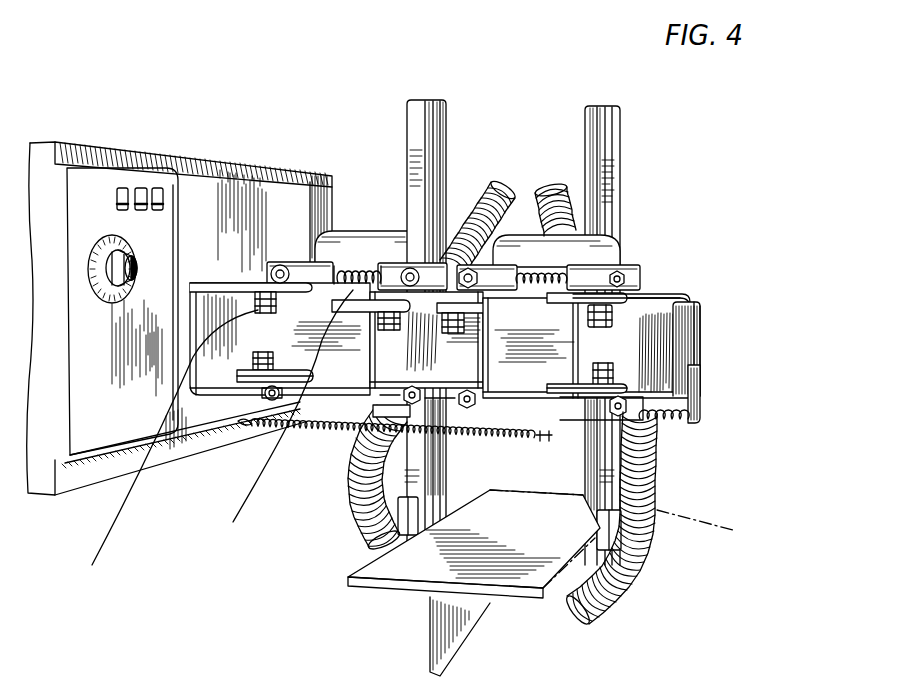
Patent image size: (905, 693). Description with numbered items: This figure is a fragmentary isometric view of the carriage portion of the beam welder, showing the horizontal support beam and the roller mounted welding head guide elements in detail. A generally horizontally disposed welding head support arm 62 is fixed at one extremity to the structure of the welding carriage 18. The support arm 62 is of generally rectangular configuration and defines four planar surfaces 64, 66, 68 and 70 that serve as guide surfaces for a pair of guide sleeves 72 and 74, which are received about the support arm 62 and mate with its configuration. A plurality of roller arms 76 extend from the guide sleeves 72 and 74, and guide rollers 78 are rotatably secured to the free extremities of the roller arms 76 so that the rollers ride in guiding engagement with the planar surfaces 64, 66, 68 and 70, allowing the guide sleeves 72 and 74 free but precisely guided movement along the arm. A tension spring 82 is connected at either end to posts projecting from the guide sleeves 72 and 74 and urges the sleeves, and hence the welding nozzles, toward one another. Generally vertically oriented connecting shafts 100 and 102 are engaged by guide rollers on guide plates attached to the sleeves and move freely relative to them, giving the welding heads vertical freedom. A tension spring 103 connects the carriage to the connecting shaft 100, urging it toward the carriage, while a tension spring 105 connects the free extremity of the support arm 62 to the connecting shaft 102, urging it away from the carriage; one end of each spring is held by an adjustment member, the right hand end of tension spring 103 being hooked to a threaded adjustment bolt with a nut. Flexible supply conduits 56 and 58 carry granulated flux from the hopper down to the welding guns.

The welding carriage 18 is at (210, 180).
The guide sleeve 72 is at (328, 293).
The tension spring 82 is at (357, 290).
The connecting shaft 102 is at (444, 123).
The connecting shaft 100 is at (617, 148).
The roller arms 76 is at (571, 297).
The planar surface 64 is at (643, 321).
The planar surface 66 is at (681, 297).
The welding head support arm 62 is at (694, 325).
The planar surface 68 is at (702, 353).
The planar surface 70 is at (690, 404).
The tension spring 105 is at (686, 425).
The guide sleeve 74 is at (528, 394).
The flexible supply conduit 58 is at (360, 498).
The flexible supply conduit 56 is at (681, 513).
The tension spring 103 is at (236, 517).
The guide rollers 78 is at (94, 561).